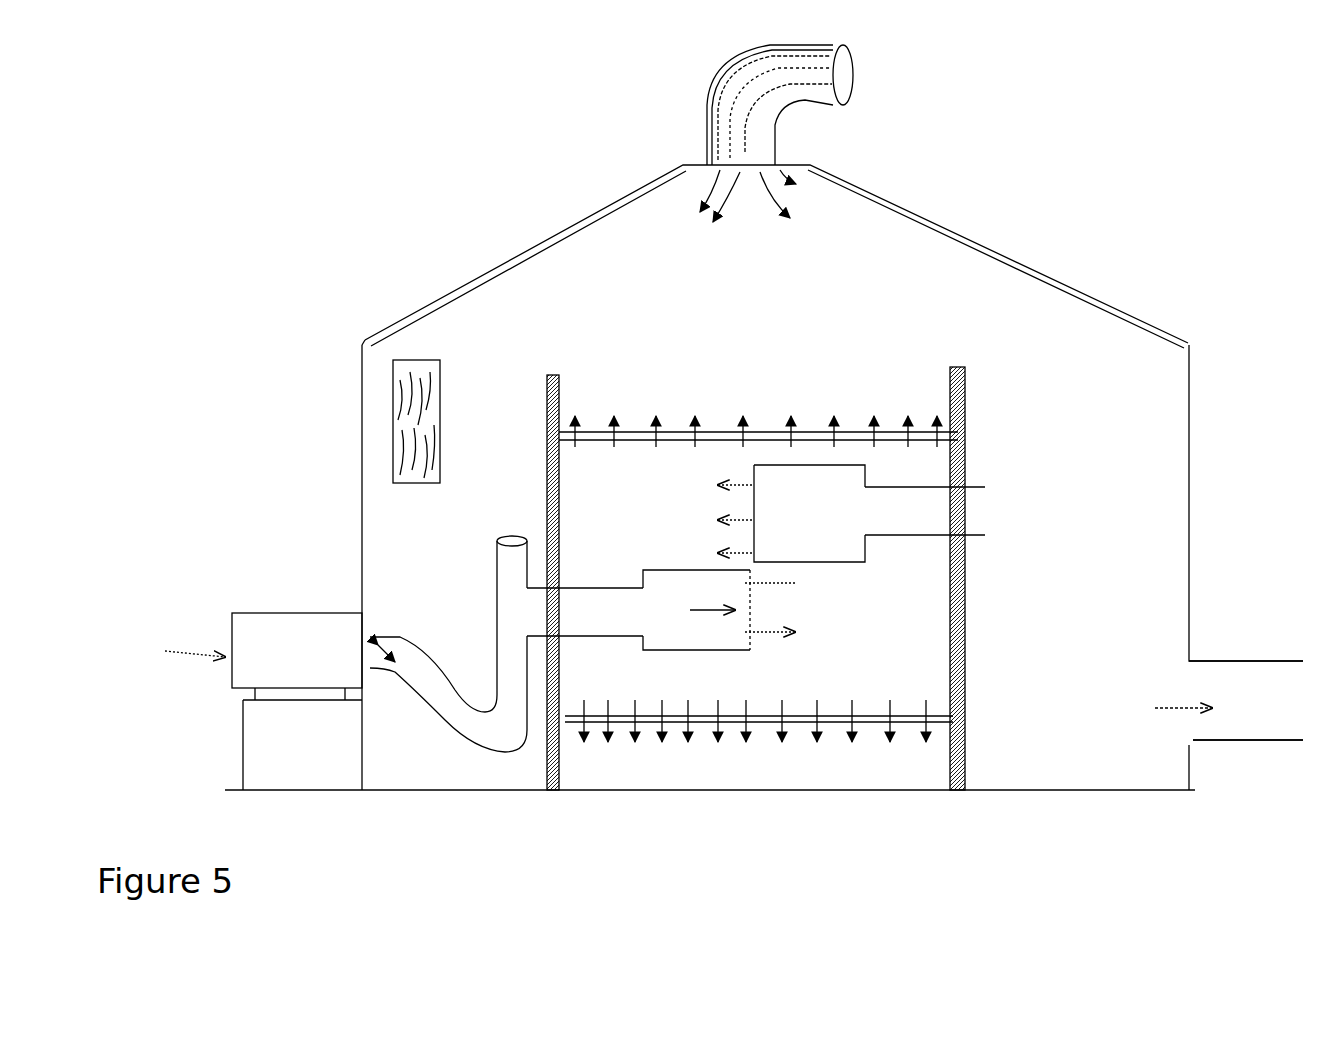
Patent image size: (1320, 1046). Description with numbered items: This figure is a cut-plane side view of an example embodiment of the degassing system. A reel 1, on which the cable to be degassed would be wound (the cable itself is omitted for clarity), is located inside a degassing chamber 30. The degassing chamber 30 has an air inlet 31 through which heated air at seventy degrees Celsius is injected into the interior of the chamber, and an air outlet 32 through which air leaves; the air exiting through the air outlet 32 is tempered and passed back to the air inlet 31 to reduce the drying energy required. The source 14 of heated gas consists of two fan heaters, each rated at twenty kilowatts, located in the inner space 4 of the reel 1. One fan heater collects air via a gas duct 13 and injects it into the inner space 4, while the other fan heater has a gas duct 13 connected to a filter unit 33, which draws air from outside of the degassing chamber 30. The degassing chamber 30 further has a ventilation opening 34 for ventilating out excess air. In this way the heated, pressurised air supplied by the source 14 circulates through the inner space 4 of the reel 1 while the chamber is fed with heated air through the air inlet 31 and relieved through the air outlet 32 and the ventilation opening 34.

The reel 1 is at (1002, 616).
The inner space 4 is at (862, 630).
The gas duct 13 is at (677, 619).
The source of heated gas 14 is at (690, 648).
The degassing chamber 30 is at (1057, 275).
The air inlet 31 is at (714, 80).
The air outlet 32 is at (1229, 700).
The filter unit 33 is at (280, 701).
The filter 34 is at (392, 412).